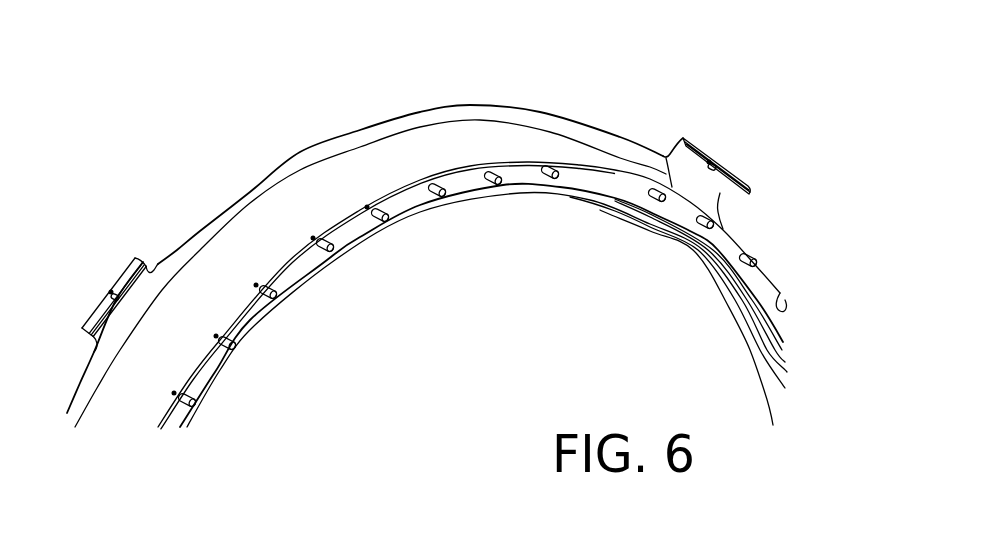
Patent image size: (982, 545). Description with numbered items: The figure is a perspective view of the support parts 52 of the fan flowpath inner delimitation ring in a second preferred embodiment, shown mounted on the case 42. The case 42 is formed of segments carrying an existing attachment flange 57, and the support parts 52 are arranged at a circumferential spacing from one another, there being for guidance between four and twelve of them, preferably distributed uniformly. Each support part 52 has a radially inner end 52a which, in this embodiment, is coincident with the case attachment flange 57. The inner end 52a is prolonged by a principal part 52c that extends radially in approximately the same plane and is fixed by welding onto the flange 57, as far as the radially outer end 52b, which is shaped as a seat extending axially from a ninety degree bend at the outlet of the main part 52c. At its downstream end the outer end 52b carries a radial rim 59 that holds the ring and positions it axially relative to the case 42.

The case 42 is at (330, 266).
The mechanical support part 52 is at (114, 273).
The radially inner end 52a is at (672, 187).
The radially outer end 52b is at (688, 132).
The principal part 52c is at (722, 193).
The attachment flange 57 is at (182, 253).
The radial rim 59 is at (722, 155).